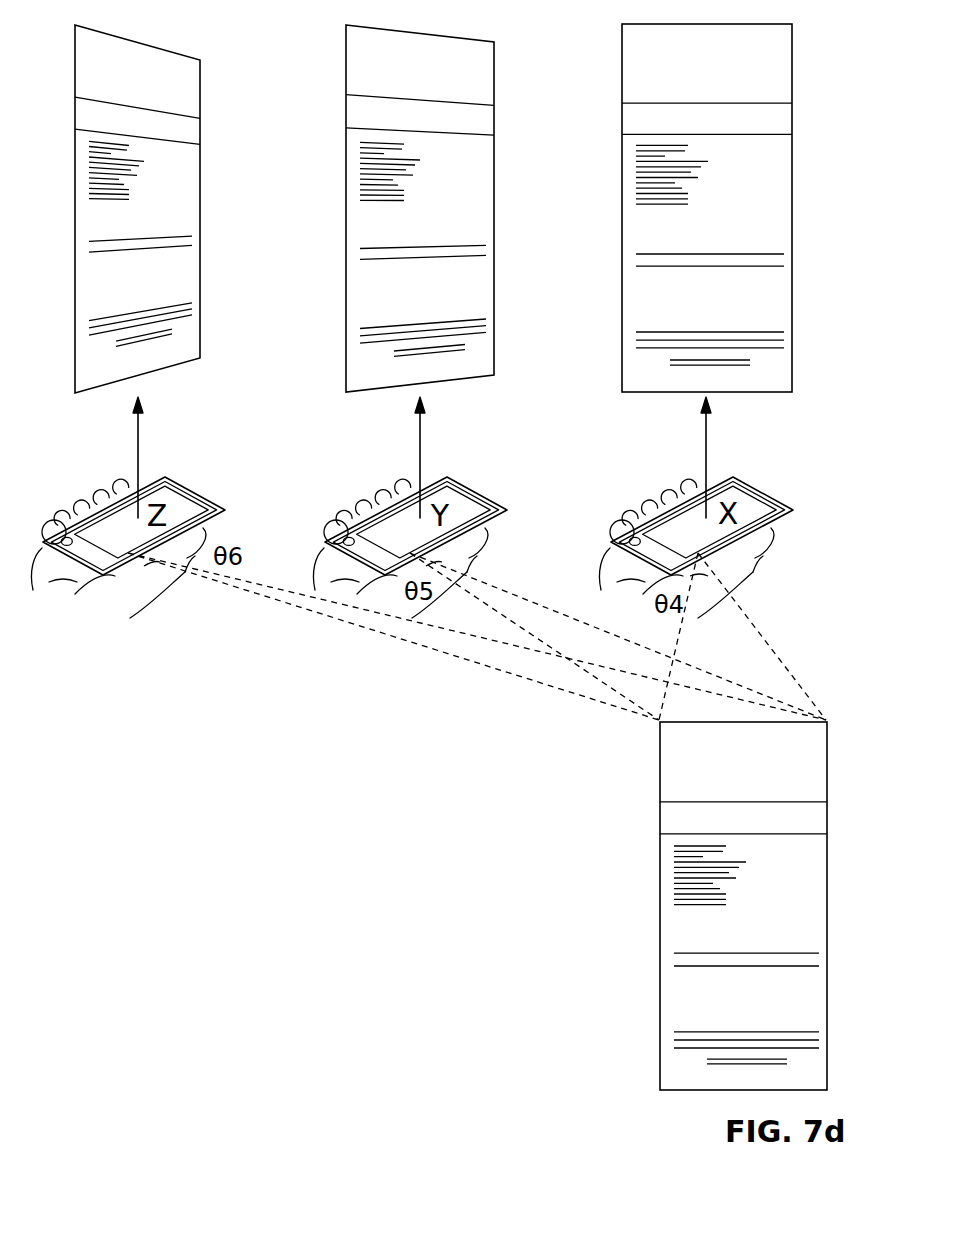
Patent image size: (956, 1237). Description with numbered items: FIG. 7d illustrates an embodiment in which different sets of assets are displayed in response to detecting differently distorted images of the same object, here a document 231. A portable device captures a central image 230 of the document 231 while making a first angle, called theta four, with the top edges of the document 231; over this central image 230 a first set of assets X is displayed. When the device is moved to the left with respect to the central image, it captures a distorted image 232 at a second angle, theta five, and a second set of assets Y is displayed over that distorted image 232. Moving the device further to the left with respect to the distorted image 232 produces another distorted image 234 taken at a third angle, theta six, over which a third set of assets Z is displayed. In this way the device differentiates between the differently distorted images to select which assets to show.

The central image 230 is at (622, 97).
The document 231 is at (657, 1012).
The distorted image 232 is at (494, 65).
The distorted image 234 is at (200, 75).